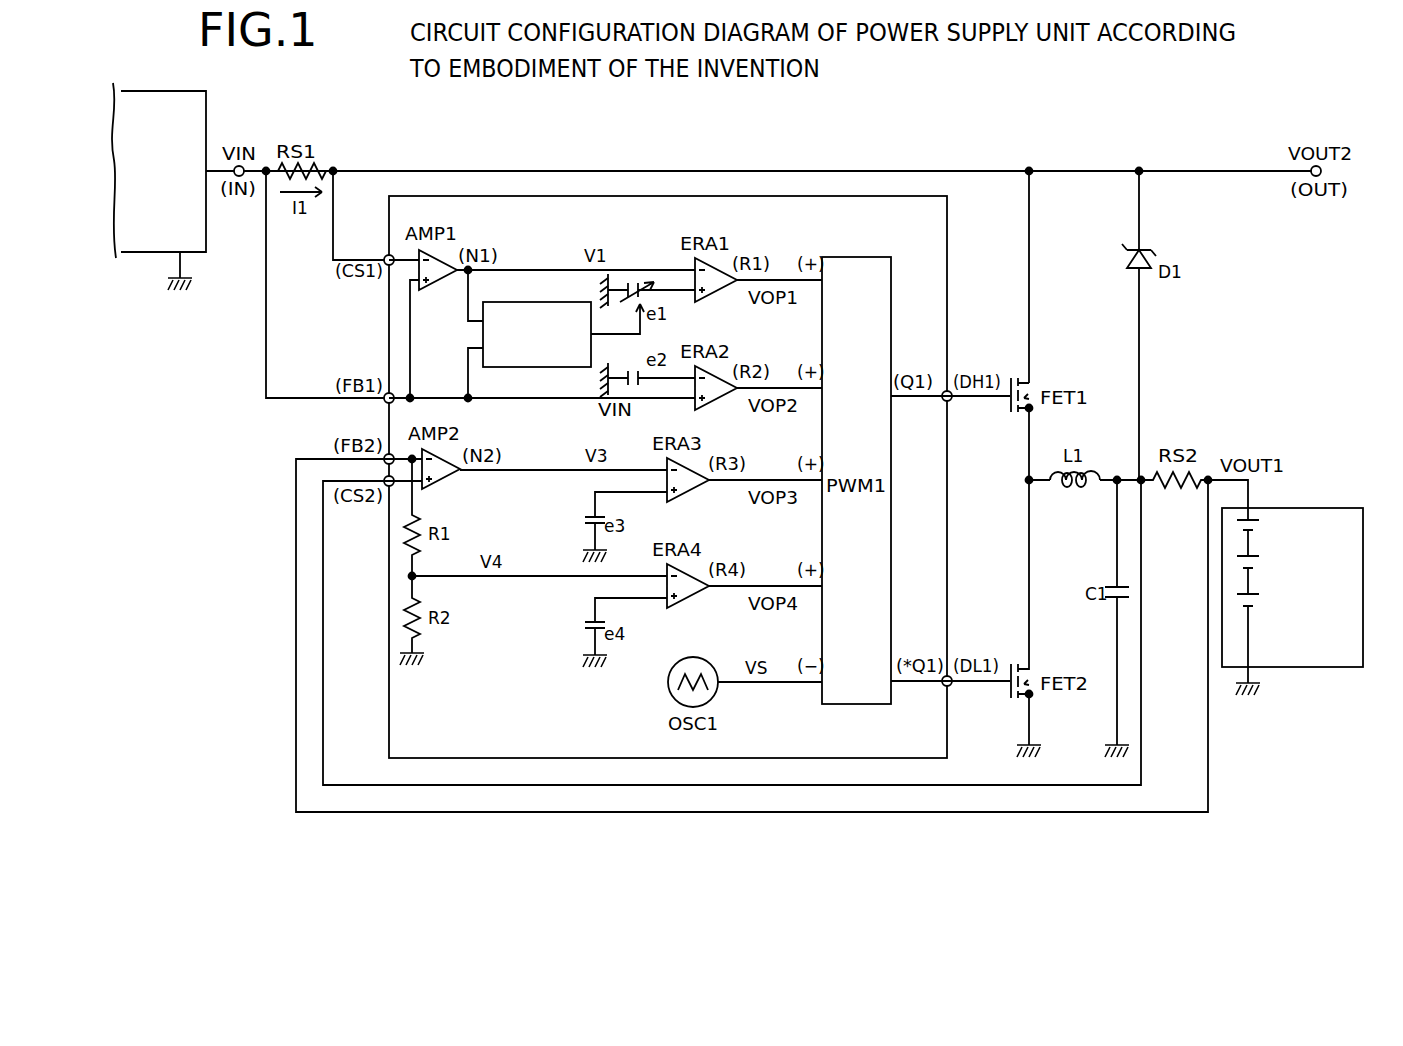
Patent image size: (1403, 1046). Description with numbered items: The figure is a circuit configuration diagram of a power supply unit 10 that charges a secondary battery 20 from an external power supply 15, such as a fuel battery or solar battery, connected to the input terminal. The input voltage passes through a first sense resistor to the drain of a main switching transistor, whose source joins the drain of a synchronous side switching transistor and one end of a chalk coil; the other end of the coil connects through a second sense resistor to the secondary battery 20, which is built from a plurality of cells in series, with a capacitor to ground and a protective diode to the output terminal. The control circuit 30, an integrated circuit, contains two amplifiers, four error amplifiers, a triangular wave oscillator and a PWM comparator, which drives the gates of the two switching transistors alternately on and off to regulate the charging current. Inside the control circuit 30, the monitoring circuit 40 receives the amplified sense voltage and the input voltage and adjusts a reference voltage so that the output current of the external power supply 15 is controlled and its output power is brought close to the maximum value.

The power supply unit 10 is at (1222, 120).
The external power supply 15 is at (206, 234).
The secondary battery 20 is at (1348, 668).
The control circuit 30 is at (949, 233).
The monitoring circuit 40 is at (480, 335).